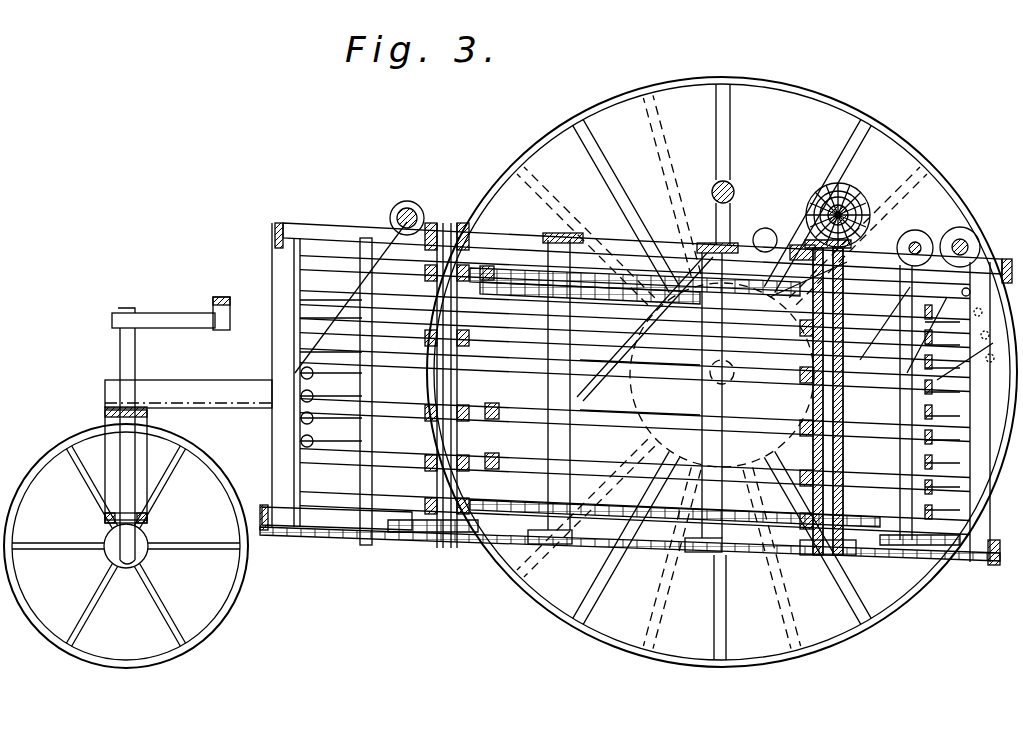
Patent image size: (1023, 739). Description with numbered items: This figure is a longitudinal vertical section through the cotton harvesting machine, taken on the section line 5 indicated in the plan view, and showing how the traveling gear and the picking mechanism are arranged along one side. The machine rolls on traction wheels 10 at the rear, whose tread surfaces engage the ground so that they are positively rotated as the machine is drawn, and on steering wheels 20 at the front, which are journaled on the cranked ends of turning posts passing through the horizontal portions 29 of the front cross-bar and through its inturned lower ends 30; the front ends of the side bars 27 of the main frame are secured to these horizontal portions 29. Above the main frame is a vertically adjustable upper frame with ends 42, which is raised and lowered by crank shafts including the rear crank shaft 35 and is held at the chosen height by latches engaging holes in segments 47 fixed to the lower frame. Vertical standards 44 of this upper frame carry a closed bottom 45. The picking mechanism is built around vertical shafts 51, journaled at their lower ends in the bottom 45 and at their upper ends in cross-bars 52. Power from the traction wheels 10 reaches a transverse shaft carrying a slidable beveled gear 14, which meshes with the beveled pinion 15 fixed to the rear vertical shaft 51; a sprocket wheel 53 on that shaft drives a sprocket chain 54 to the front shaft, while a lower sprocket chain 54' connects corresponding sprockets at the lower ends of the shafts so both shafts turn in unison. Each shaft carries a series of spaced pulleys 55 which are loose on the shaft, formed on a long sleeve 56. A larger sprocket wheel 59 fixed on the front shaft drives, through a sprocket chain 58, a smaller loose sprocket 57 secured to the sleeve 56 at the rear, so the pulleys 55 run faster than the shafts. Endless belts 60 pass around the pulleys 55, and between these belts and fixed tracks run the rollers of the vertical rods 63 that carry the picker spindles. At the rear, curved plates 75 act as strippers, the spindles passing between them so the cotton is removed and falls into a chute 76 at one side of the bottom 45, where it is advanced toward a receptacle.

The traction wheels 10 is at (722, 80).
The slidable beveled gear 14 is at (858, 207).
The beveled pinion 15 is at (838, 310).
The steering wheels 20 is at (236, 593).
The side bars 27 is at (128, 470).
The horizontal portions of the front cross-bar 29 is at (106, 408).
The inturned lower ends 30 is at (145, 522).
The rear crank shaft 35 is at (963, 242).
The ends of the upper frame 42 is at (275, 237).
The vertical standards 44 is at (273, 438).
The bottom 45 is at (752, 546).
The segments 47 is at (917, 232).
The frame 5 is at (272, 462).
The vertical shafts 51 is at (458, 393).
The cross-bars 52 is at (447, 224).
The sprocket wheel 53 is at (383, 240).
The vertical rods 63 is at (898, 528).
The sprocket chain 54 is at (635, 380).
The lower sprocket chain 54' is at (675, 505).
The pulleys 55 is at (490, 462).
The sleeve 56 is at (818, 340).
The loose sprocket 57 is at (880, 318).
The sprocket chain 58 is at (620, 280).
The sprocket wheel 59 is at (490, 276).
The endless belts 60 is at (672, 338).
The curved plates 75 is at (930, 325).
The chute 76 is at (930, 462).